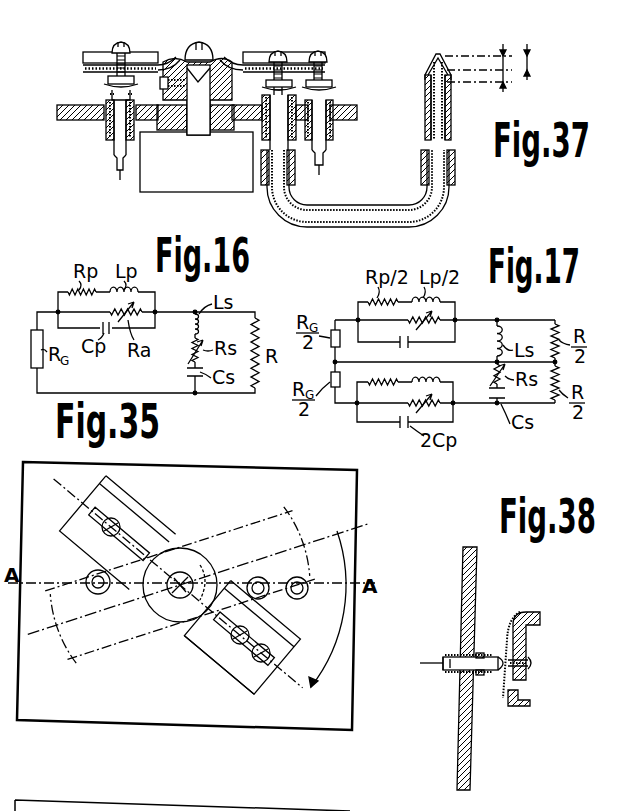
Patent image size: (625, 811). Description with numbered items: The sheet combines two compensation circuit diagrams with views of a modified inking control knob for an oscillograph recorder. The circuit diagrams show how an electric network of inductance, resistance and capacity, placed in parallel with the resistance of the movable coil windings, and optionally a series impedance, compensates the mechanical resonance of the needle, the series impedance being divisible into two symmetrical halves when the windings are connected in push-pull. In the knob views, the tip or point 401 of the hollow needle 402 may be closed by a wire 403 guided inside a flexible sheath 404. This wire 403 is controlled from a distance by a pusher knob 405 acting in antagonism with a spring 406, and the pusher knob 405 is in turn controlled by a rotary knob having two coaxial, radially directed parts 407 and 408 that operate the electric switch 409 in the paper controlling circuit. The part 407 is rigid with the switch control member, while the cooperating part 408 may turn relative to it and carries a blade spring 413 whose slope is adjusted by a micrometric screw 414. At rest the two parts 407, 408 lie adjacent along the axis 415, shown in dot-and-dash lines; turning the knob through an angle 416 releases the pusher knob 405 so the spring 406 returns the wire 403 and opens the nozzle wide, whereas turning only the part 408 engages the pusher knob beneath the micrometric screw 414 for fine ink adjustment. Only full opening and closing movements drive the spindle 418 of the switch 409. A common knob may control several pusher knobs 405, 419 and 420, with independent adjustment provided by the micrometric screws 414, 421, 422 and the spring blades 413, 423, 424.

In FIG. 37, the tip or point of the hollow needle 401 is at (441, 56).
In FIG. 37, the hollow needle 402 is at (448, 120).
In FIG. 37, the wire 403 is at (448, 100).
In FIG. 37, the flexible sheath 404 is at (452, 172).
In FIG. 37, the pusher knob 405 is at (268, 84).
In FIG. 37, the spring 406 is at (268, 98).
In FIG. 35, the first part of the rotary knob 407 is at (228, 672).
In FIG. 37, the cooperating part of the rotary knob 408 is at (88, 64).
In FIG. 35, the cooperating part of the rotary knob 408 is at (180, 585).
In FIG. 38, the cooperating part of the rotary knob 408 is at (522, 642).
In FIG. 37, the electric switch 409 is at (196, 162).
In FIG. 37, the blade spring 413 is at (286, 60).
In FIG. 38, the blade spring 413 is at (503, 700).
In FIG. 37, the micrometric screw 414 is at (278, 56).
In FIG. 38, the micrometric screw 414 is at (532, 666).
In FIG. 35, the axis 415 is at (368, 530).
In FIG. 35, the angle 416 is at (336, 636).
In FIG. 37, the spindle of the electric switch 418 is at (196, 88).
In FIG. 37, the pusher knob 419 is at (330, 92).
In FIG. 37, the pusher knob 420 is at (112, 83).
In FIG. 37, the micrometric screw 421 is at (320, 54).
In FIG. 37, the micrometric screw 422 is at (121, 50).
In FIG. 37, the spring blade 423 is at (330, 84).
In FIG. 37, the spring blade 424 is at (130, 84).